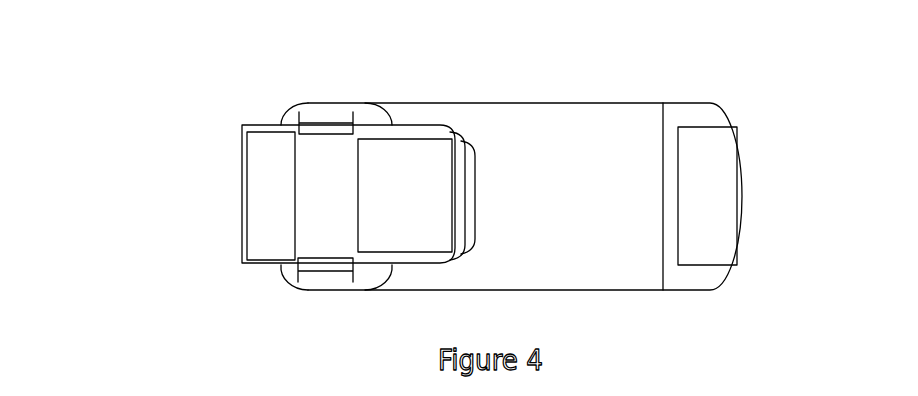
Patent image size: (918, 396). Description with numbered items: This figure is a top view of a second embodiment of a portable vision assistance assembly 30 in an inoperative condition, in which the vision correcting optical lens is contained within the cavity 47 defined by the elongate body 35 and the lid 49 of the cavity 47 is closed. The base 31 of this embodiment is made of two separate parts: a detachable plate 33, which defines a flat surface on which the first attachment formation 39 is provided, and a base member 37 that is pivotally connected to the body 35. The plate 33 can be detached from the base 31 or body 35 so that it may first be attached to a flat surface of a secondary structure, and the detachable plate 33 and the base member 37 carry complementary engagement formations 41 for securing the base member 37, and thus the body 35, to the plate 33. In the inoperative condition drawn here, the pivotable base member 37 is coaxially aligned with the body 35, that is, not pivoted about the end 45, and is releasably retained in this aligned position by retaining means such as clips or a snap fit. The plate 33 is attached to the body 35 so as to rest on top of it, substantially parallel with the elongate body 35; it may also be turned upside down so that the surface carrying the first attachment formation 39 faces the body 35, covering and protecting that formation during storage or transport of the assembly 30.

The portable vision assistance assembly 30 is at (136, 52).
The base 31 is at (265, 95).
The detachable plate 33 is at (328, 183).
The body 35 is at (530, 84).
The base member 37 is at (364, 112).
The first attachment formation 39 is at (387, 199).
The complementary engagement formations 41 is at (319, 112).
The end 45 is at (279, 302).
The cavity 47 is at (563, 204).
The lid 49 is at (683, 120).